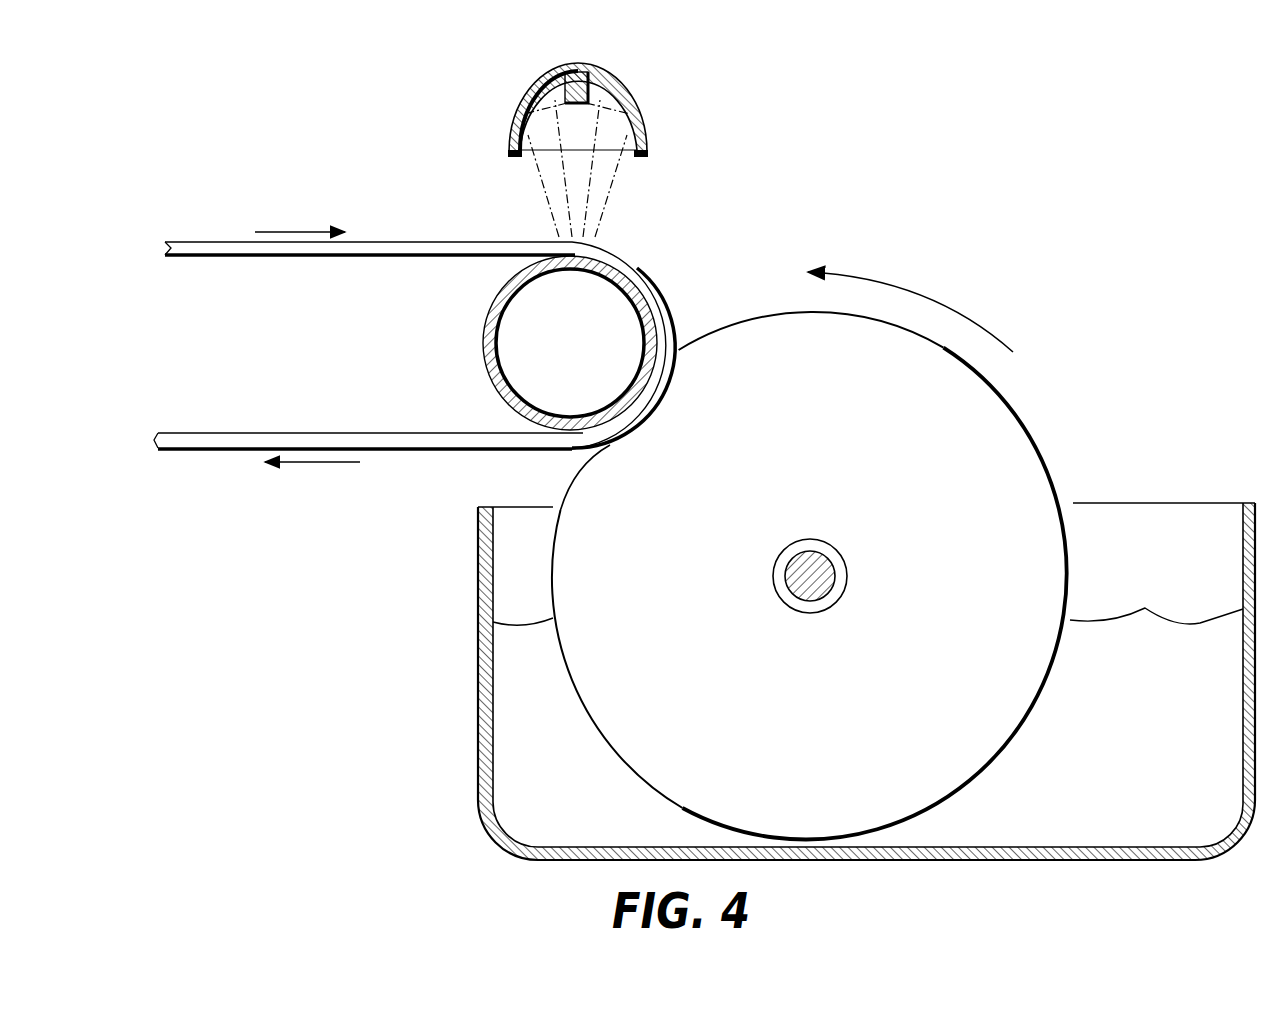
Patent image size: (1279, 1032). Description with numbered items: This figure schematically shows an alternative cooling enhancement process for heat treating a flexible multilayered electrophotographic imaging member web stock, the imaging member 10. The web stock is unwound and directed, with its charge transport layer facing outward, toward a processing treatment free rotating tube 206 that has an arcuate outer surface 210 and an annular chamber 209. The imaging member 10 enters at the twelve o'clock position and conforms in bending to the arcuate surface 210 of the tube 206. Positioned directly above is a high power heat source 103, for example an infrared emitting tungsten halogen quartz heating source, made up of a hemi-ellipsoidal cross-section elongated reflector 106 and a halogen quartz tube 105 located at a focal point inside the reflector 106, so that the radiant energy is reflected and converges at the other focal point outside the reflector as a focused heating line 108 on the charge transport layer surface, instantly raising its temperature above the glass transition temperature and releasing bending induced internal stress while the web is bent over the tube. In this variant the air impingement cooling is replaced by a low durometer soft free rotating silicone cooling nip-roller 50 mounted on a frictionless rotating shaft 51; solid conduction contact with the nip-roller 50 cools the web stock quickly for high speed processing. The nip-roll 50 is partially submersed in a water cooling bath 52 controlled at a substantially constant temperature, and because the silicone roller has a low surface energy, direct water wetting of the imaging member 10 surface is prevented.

The imaging member 10 is at (205, 255).
The silicone cooling nip-roller 50 is at (1012, 424).
The rotating shaft 51 is at (818, 556).
The water cooling bath 52 is at (1097, 628).
The heat source 103 is at (559, 95).
The halogen quartz tube 105 is at (575, 72).
The reflector 106 is at (612, 96).
The focused heating line 108 is at (576, 252).
The free rotating tube 206 is at (534, 335).
The annular chamber 209 is at (545, 374).
The arcuate outer surface 210 is at (673, 256).